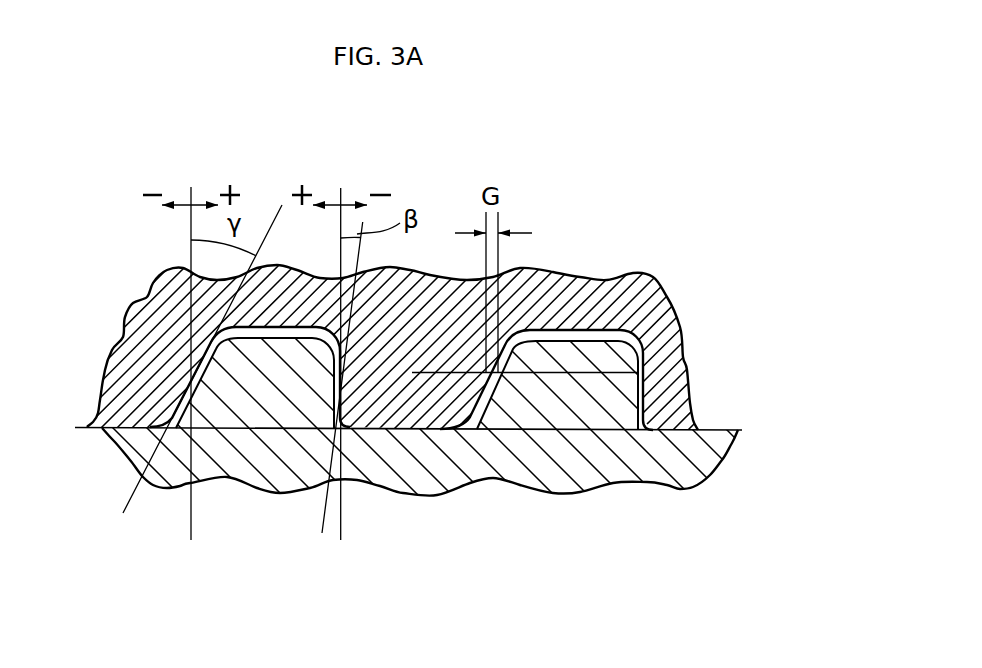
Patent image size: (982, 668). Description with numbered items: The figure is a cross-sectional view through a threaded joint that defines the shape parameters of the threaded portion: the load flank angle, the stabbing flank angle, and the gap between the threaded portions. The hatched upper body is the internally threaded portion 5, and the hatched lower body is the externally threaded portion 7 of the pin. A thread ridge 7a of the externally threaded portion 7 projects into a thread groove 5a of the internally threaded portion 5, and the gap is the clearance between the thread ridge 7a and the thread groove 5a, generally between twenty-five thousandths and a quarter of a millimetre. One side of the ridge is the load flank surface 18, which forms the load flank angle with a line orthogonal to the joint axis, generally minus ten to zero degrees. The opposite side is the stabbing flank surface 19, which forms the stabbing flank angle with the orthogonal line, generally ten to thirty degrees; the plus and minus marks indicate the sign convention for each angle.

The internally threaded portion 5 is at (165, 343).
The thread groove 5a is at (537, 327).
The externally threaded portion 7 is at (383, 470).
The thread ridge 7a is at (565, 430).
The load flank surface 18 is at (340, 380).
The stabbing flank surface 19 is at (203, 368).